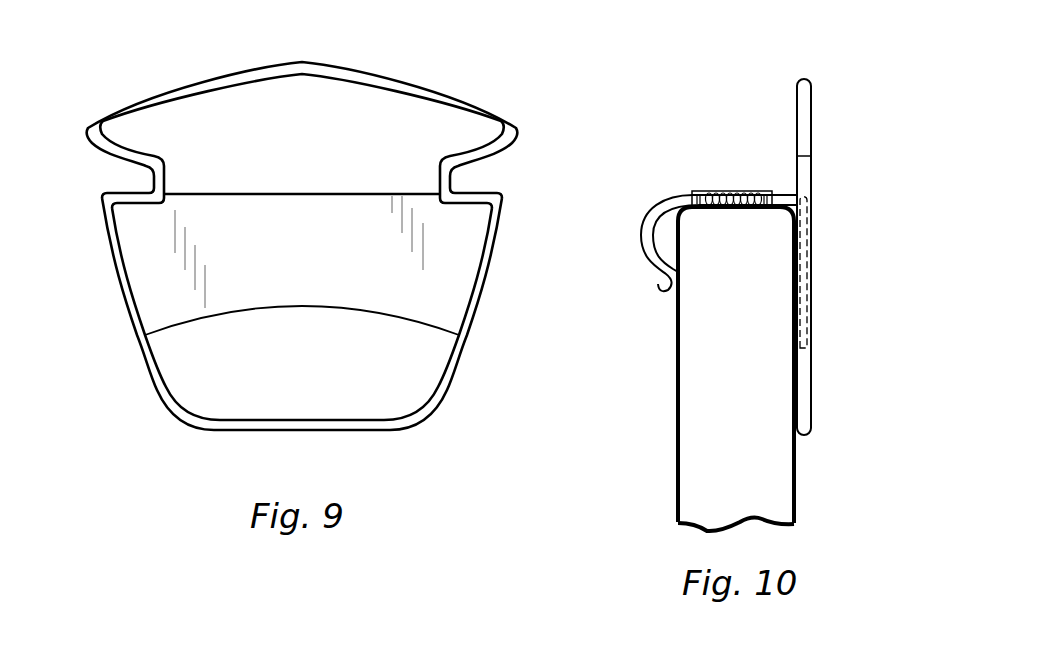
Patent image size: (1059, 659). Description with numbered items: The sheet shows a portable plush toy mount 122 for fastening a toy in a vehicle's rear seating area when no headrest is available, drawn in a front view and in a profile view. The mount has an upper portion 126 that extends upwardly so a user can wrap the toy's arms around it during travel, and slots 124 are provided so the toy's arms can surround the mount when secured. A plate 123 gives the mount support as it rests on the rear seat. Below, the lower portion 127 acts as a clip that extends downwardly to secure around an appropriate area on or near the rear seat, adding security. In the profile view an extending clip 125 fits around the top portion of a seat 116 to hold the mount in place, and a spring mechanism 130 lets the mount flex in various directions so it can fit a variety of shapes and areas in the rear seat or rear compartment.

In FIG. 10, the seat 116 is at (678, 463).
In FIG. 9, the toy mount 122 is at (159, 428).
In FIG. 10, the toy mount 122 is at (768, 112).
In FIG. 9, the plate 123 is at (283, 296).
In FIG. 9, the slots 124 is at (142, 178).
In FIG. 10, the extending clip 125 is at (662, 282).
In FIG. 9, the upper portion 126 is at (102, 125).
In FIG. 10, the upper portion 126 is at (812, 117).
In FIG. 9, the lower portion 127 is at (452, 372).
In FIG. 10, the lower portion 127 is at (812, 393).
In FIG. 10, the spring mechanism 130 is at (723, 188).